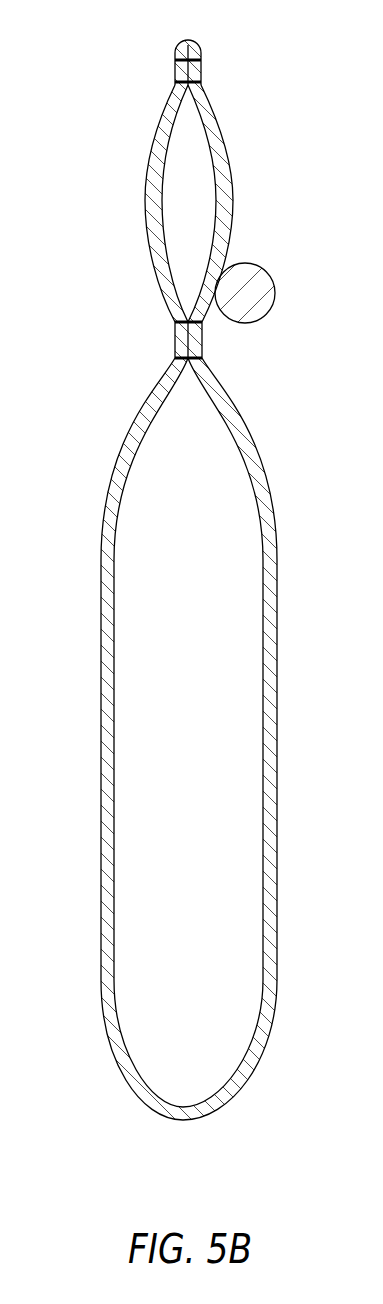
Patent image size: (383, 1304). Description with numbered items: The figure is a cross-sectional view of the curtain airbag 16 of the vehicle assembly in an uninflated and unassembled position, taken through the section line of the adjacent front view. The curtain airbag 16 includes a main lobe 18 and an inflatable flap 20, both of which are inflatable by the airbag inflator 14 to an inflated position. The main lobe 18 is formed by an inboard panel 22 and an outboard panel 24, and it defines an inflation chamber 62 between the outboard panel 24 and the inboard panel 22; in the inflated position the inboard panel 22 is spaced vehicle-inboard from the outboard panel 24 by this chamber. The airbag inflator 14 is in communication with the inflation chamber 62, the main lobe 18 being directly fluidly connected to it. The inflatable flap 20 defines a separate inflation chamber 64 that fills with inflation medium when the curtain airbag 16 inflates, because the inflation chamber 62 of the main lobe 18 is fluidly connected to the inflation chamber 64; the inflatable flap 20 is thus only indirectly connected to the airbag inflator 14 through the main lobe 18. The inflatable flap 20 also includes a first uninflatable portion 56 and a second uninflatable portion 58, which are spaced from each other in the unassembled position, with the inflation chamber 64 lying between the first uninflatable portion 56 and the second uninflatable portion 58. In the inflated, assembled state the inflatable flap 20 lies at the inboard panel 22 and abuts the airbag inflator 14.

The airbag inflator 14 is at (263, 293).
The curtain airbag 16 is at (191, 652).
The main lobe 18 is at (270, 627).
The inflatable flap 20 is at (191, 652).
The inboard panel 22 is at (100, 845).
The outboard panel 24 is at (278, 845).
The first uninflatable portion 56 is at (197, 70).
The second uninflatable portion 58 is at (195, 340).
The inflation chamber 62 is at (157, 602).
The inflation chamber 64 is at (175, 178).